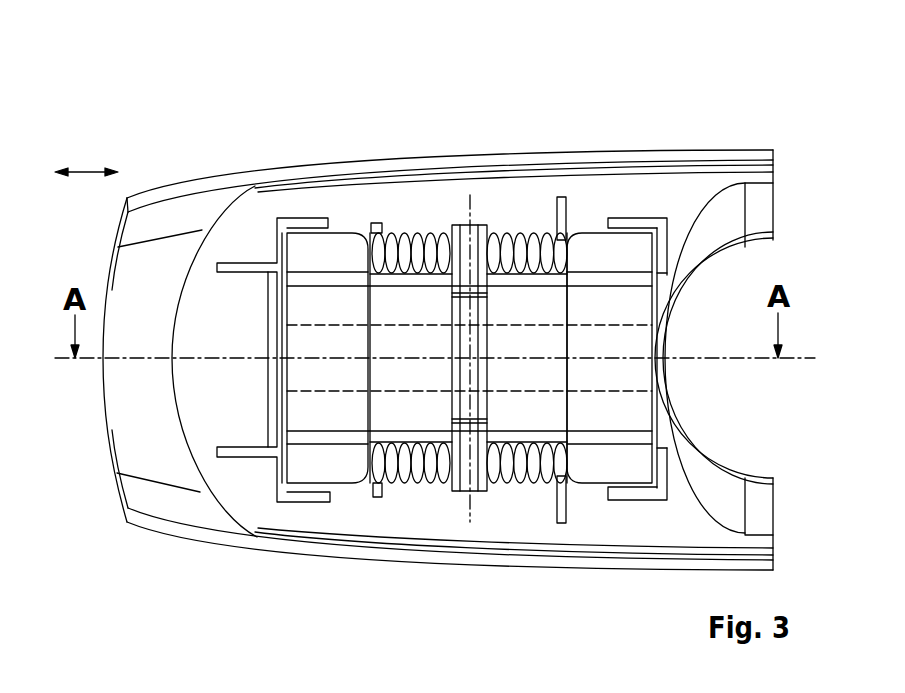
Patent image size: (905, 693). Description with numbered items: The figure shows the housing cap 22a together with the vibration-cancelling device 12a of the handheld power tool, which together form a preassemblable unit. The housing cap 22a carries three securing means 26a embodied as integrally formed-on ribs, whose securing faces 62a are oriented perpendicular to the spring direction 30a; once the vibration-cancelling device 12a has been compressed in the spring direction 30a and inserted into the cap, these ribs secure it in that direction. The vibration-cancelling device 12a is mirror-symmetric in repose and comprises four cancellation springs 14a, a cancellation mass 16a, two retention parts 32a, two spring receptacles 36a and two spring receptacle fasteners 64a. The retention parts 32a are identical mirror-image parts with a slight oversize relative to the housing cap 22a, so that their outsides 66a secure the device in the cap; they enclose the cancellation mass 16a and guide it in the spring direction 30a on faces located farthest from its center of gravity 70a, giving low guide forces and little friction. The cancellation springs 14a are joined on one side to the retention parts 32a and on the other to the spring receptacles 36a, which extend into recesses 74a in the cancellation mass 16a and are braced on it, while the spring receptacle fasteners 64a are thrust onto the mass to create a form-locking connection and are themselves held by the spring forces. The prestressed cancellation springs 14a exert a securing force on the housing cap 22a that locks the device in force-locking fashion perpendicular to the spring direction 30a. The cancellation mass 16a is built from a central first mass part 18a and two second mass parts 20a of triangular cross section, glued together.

The vibration-cancelling device 12a is at (170, 60).
The cancellation springs 14a is at (418, 233).
The cancellation mass 16a is at (300, 376).
The first mass part 18a is at (406, 337).
The second mass parts 20a is at (522, 303).
The housing cap 22a is at (167, 190).
The securing means 26a is at (277, 312).
The spring direction 30a is at (85, 178).
The retention parts 32a is at (320, 253).
The spring receptacles 36a is at (473, 222).
The securing faces 62a is at (290, 465).
The spring receptacle fasteners 64a is at (452, 227).
The outsides 66a is at (285, 422).
The center of gravity 70a is at (475, 360).
The recesses 74a is at (475, 433).